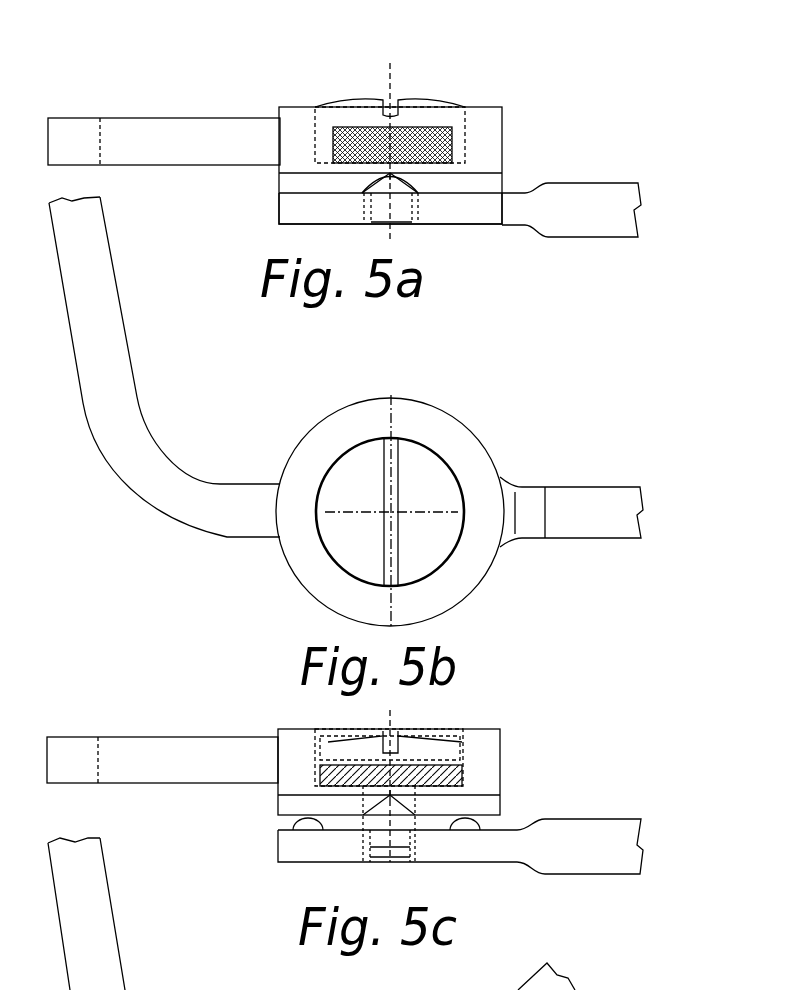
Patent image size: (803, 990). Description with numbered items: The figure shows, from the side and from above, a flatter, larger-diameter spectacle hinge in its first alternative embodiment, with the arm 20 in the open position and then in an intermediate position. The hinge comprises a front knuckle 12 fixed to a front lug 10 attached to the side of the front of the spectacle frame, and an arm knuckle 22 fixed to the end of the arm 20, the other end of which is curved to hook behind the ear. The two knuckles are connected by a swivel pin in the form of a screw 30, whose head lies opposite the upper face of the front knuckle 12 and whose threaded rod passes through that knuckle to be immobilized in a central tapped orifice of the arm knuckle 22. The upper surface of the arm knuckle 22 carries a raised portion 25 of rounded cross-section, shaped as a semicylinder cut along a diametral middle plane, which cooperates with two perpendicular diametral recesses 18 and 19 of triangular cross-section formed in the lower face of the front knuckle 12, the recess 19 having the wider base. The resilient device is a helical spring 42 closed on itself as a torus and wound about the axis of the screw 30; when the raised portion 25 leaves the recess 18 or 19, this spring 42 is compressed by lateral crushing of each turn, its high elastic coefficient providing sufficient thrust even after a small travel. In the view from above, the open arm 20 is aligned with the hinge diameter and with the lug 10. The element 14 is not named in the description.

The front lug 10 is at (195, 140).
The front knuckle 12 is at (278, 78).
The flexible element 14 is at (455, 133).
The recess 18 is at (478, 172).
The recess 19 is at (418, 187).
The arm 20 is at (567, 210).
The arm knuckle 22 is at (295, 211).
The raised portion 25 is at (397, 190).
The screw 30 is at (360, 97).
The helical spring 42 is at (418, 140).